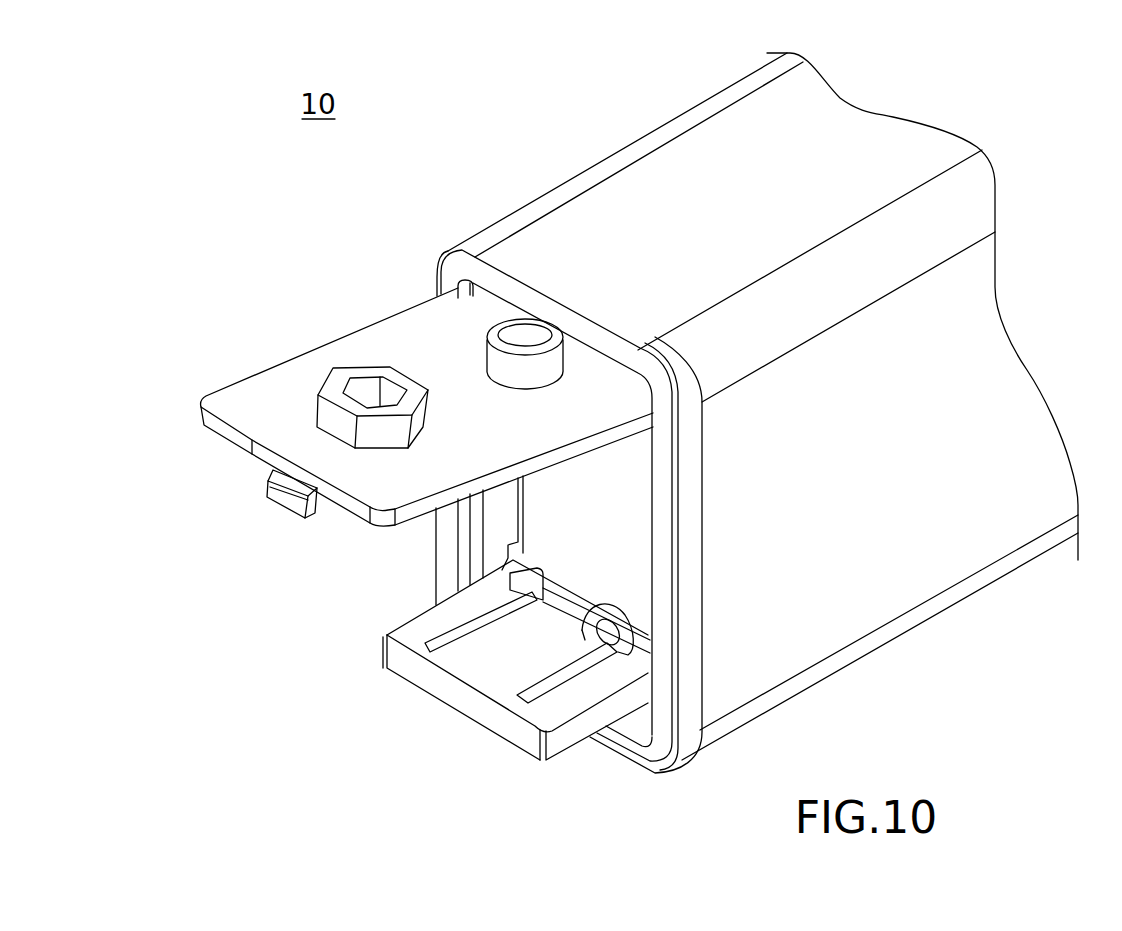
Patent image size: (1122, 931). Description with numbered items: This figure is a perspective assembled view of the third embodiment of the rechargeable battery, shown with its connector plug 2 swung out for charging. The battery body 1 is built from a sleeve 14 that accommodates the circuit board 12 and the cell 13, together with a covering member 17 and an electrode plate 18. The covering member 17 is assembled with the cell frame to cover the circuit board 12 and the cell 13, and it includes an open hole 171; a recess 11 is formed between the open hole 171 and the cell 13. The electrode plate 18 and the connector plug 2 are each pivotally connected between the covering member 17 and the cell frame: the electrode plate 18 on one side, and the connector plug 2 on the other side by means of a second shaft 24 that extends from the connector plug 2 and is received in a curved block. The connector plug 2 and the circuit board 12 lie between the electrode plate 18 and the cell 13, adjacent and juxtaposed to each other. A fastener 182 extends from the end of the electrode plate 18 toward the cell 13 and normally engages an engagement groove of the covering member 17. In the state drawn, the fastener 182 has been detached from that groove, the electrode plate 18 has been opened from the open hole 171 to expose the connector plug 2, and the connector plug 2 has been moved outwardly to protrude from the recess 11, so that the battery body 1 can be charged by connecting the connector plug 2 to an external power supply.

The battery body 1 is at (627, 134).
The connector plug 2 is at (443, 709).
The recess 11 is at (498, 522).
The circuit board 12 is at (630, 456).
The cell 13 is at (630, 558).
The sleeve 14 is at (727, 153).
The covering member 17 is at (433, 266).
The electrode plate 18 is at (270, 398).
The second shaft 24 is at (505, 556).
The open hole 171 is at (455, 296).
The fastener 182 is at (287, 494).